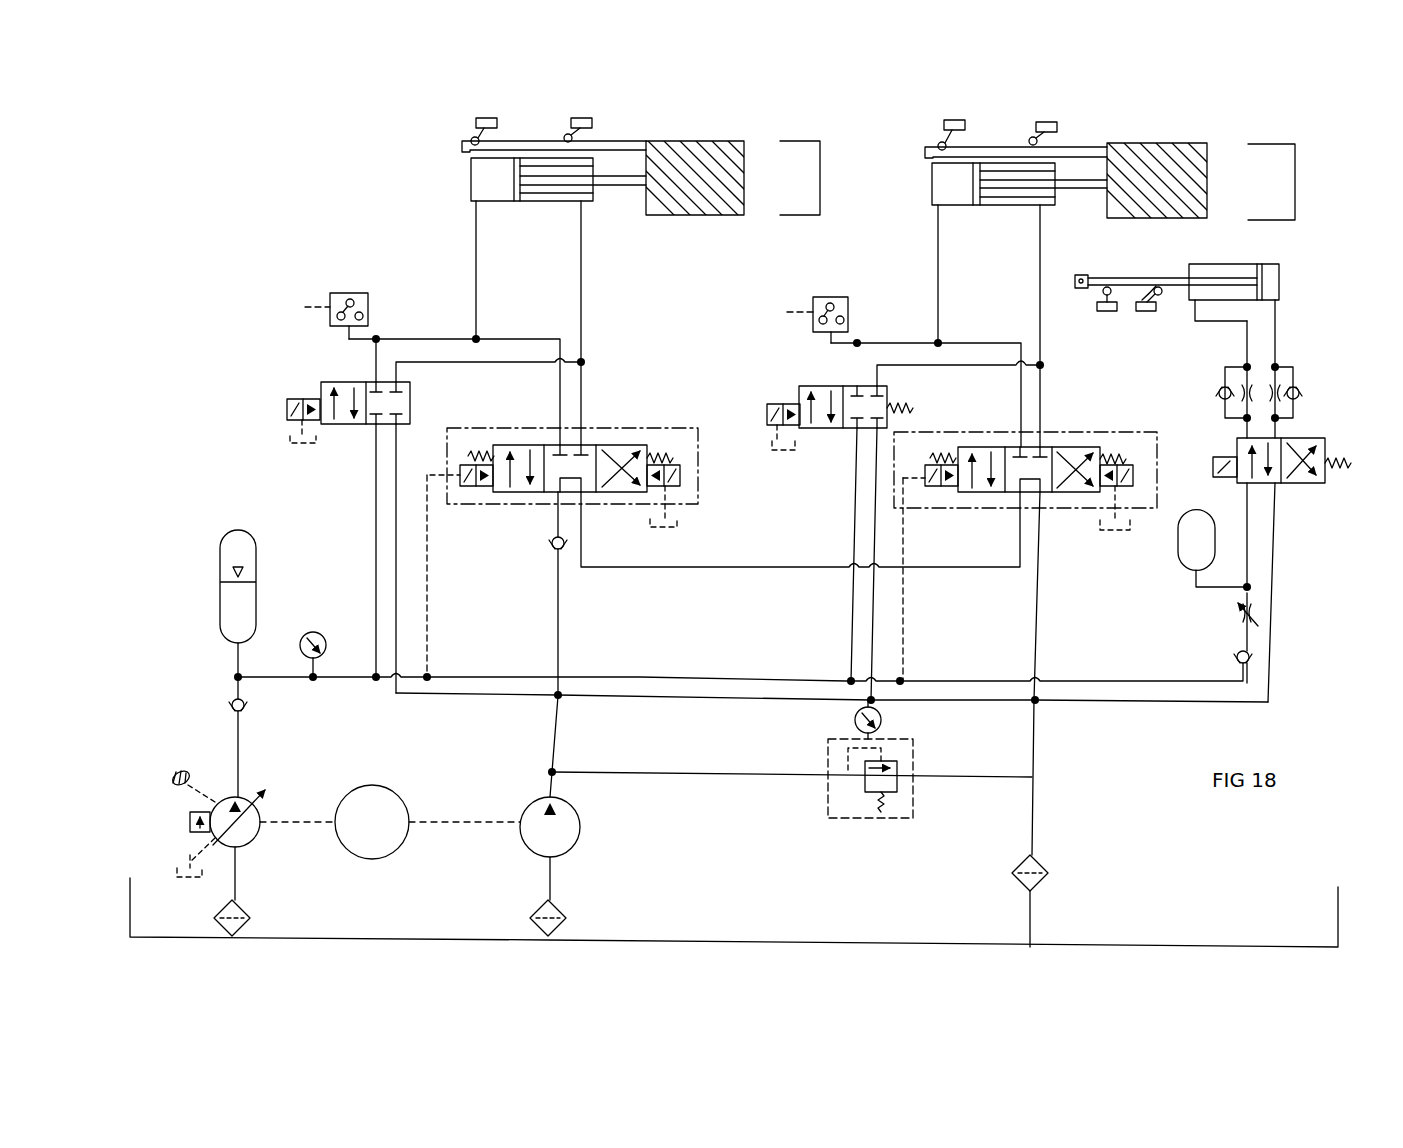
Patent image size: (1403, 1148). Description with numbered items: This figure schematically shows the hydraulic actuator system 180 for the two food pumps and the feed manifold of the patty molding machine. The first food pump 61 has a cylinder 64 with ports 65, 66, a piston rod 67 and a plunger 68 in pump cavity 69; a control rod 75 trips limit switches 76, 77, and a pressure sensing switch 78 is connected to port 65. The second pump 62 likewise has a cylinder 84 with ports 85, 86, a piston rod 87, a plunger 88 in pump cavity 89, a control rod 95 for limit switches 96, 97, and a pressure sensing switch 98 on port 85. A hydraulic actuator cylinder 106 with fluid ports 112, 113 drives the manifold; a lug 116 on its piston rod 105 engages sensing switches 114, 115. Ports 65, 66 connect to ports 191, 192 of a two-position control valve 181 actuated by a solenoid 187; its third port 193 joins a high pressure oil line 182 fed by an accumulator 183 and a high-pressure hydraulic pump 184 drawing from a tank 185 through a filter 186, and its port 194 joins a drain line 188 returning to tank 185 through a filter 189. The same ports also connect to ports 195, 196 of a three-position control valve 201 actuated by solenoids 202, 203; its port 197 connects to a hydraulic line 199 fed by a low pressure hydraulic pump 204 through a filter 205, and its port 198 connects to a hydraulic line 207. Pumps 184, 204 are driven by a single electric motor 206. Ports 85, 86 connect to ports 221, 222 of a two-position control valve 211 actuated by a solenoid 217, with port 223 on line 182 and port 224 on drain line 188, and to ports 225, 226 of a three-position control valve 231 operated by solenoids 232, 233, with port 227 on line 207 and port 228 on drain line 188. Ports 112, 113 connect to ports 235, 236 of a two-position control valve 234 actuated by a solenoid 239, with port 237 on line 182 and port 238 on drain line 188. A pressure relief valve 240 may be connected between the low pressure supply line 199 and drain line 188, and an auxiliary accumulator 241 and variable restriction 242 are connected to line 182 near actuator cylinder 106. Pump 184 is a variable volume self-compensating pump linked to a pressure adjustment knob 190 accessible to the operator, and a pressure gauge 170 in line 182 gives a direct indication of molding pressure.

The first food pump 61 is at (624, 160).
The second food pump 62 is at (1088, 161).
The cylinder 64 is at (535, 203).
The port 65 is at (471, 208).
The port 66 is at (577, 203).
The piston rod 67 is at (617, 190).
The first pump plunger 68 is at (716, 141).
The pump cavity 69 is at (806, 141).
The control rod 75 is at (606, 141).
The limit switch 76 is at (584, 118).
The limit switch 77 is at (484, 118).
The pressure sensing switch 78 is at (368, 305).
The cylinder 84 is at (993, 205).
The port 85 is at (938, 222).
The port 86 is at (1040, 205).
The piston rod 87 is at (1080, 190).
The plunger 88 is at (1182, 143).
The pump cavity 89 is at (1282, 144).
The control rod 95 is at (998, 147).
The limit switch 96 is at (1050, 122).
The limit switch 97 is at (955, 120).
The pressure sensing switch 98 is at (848, 312).
The piston rod 105 is at (1116, 278).
The hydraulic actuator cylinder 106 is at (1206, 295).
The port 112 is at (1206, 321).
The port 113 is at (1278, 312).
The sensing switch 114 is at (1107, 311).
The sensing switch 115 is at (1147, 311).
The lug 116 is at (1154, 288).
The pressure gauge 170 is at (320, 634).
The hydraulic actuator system 180 is at (430, 240).
The two-position control valve 181 is at (338, 428).
The high pressure oil line 182 is at (346, 684).
The accumulator 183 is at (258, 604).
The high-pressure hydraulic pump 184 is at (255, 800).
The tank 185 is at (1338, 712).
The filter 186 is at (250, 910).
The solenoid 187 is at (296, 399).
The drain line 188 is at (682, 700).
The filter 189 is at (1048, 866).
The pressure adjustment knob 190 is at (176, 770).
The port 191 is at (334, 508).
The port 192 is at (398, 362).
The port 193 is at (378, 432).
The port 194 is at (398, 440).
The port 195 is at (574, 449).
The port 196 is at (590, 440).
The port 197 is at (553, 520).
The port 198 is at (588, 496).
The hydraulic line 199 is at (555, 738).
The three-position control valve 201 is at (510, 504).
The solenoid 202 is at (458, 472).
The solenoid 203 is at (680, 478).
The low pressure hydraulic pump 204 is at (522, 812).
The filter 205 is at (566, 907).
The electric motor 206 is at (393, 786).
The hydraulic line 207 is at (720, 567).
The two-position control valve 211 is at (815, 432).
The solenoid 217 is at (775, 404).
The port 221 is at (855, 386).
The port 222 is at (884, 380).
The port 223 is at (819, 534).
The port 224 is at (860, 440).
The port 225 is at (1029, 627).
The port 226 is at (1045, 445).
The port 227 is at (1022, 498).
The port 228 is at (1040, 500).
The three-position control valve 231 is at (1112, 432).
The solenoid 232 is at (935, 492).
The solenoid 233 is at (1130, 500).
The two-position control valve 234 is at (1330, 483).
The port 235 is at (1225, 418).
The port 236 is at (1298, 420).
The port 237 is at (1279, 484).
The port 238 is at (1278, 487).
The solenoid 239 is at (1213, 467).
The pressure relief valve 240 is at (858, 818).
The auxiliary accumulator 241 is at (1180, 560).
The variable restriction 242 is at (1236, 611).